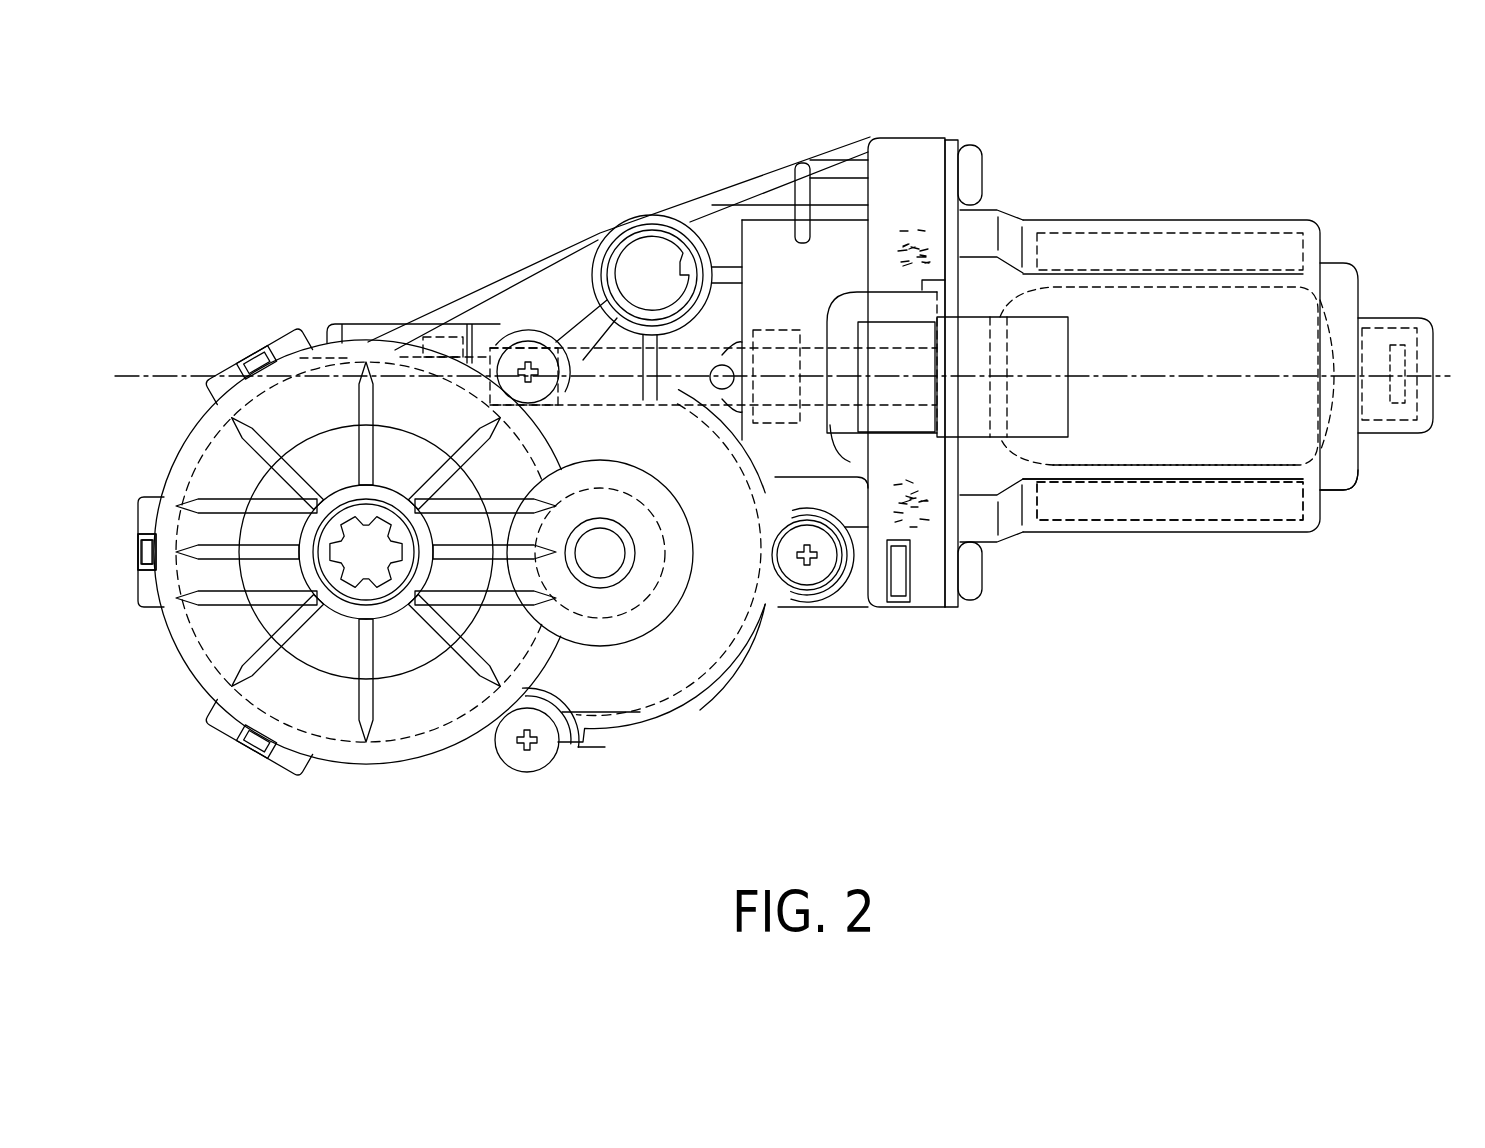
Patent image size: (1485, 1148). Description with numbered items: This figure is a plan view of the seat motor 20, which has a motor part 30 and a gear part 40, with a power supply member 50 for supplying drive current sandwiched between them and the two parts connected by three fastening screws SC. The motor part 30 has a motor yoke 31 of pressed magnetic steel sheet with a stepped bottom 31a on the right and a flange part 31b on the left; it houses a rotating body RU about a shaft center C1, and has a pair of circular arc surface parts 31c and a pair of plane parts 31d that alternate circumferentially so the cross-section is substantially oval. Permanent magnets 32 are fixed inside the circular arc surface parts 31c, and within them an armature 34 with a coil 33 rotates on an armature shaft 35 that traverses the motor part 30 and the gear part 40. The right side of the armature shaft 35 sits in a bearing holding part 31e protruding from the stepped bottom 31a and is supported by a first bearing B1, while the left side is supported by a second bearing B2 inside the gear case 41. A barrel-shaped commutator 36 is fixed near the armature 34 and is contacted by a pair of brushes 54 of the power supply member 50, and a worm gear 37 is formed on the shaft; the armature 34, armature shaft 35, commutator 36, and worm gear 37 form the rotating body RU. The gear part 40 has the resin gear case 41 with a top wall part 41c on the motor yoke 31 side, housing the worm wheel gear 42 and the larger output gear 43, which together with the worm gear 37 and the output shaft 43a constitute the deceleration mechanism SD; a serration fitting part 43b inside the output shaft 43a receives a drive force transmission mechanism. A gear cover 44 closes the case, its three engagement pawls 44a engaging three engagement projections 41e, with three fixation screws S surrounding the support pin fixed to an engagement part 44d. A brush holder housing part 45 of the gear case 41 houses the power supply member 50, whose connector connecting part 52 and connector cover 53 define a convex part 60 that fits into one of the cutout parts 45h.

The seat motor 20 is at (405, 183).
The motor part 30 is at (1272, 214).
The motor yoke 31 is at (1316, 230).
The stepped bottom 31a is at (1352, 320).
The flange part 31b is at (952, 513).
The circular arc surface parts 31c is at (1192, 218).
The plane parts 31d is at (1290, 483).
The bearing holding part 31e is at (1425, 330).
The permanent magnets 32 is at (1262, 234).
The coil 33 is at (1090, 462).
The armature 34 is at (1138, 420).
The armature shaft 35 is at (1328, 440).
The commutator 36 is at (1005, 325).
The worm gear 37 is at (590, 305).
The gear part 40 is at (665, 200).
The gear case 41 is at (562, 248).
The top wall part 41c is at (770, 260).
The engagement projections 41e is at (258, 360).
The worm wheel gear 42 is at (607, 668).
The output gear 43 is at (403, 703).
The output shaft 43a is at (348, 550).
The serration fitting part 43b is at (368, 541).
The gear cover 44 is at (637, 663).
The engagement pawls 44a is at (285, 340).
The engagement part 44d is at (604, 558).
The brush holder housing part 45 is at (877, 268).
The cutout parts 45h is at (903, 605).
The power supply member 50 is at (850, 300).
The connector connecting part 52 is at (1002, 377).
The connector cover 53 is at (896, 377).
The brushes 54 is at (908, 240).
The convex part 60 is at (830, 320).
The first bearing B1 is at (1338, 430).
The second bearing B2 is at (425, 335).
The shaft center C1 is at (155, 376).
The rotating body RU is at (1095, 287).
The fixation screws S is at (515, 360).
The fastening screws SC is at (975, 172).
The deceleration mechanism SD is at (695, 615).